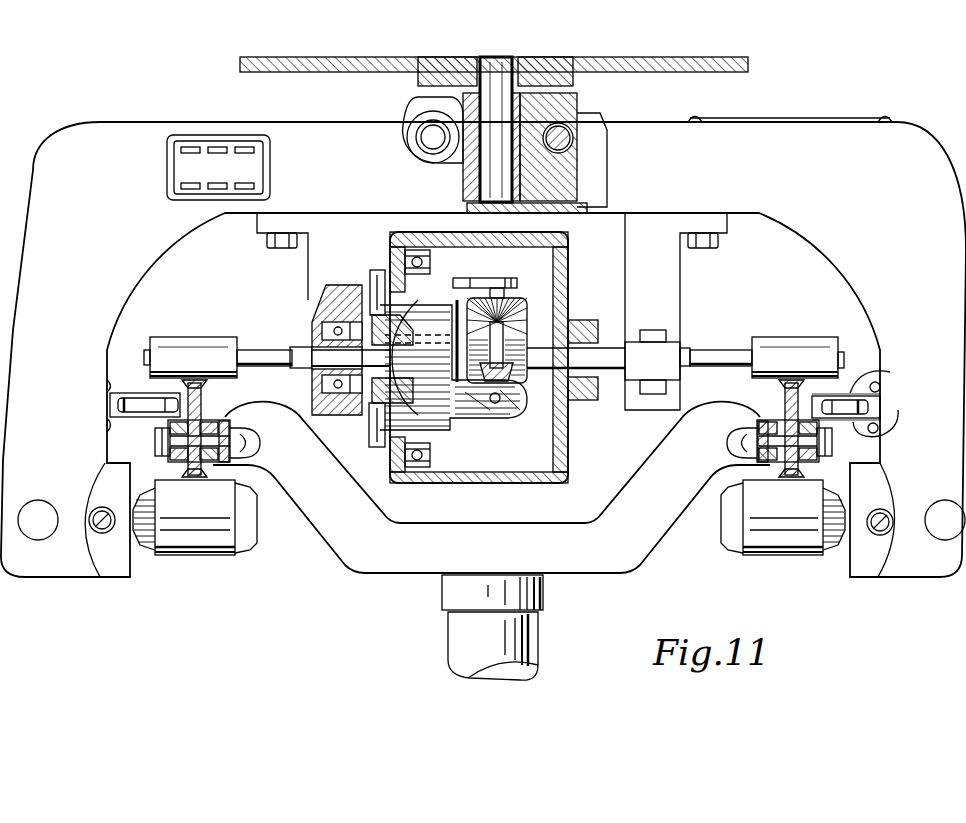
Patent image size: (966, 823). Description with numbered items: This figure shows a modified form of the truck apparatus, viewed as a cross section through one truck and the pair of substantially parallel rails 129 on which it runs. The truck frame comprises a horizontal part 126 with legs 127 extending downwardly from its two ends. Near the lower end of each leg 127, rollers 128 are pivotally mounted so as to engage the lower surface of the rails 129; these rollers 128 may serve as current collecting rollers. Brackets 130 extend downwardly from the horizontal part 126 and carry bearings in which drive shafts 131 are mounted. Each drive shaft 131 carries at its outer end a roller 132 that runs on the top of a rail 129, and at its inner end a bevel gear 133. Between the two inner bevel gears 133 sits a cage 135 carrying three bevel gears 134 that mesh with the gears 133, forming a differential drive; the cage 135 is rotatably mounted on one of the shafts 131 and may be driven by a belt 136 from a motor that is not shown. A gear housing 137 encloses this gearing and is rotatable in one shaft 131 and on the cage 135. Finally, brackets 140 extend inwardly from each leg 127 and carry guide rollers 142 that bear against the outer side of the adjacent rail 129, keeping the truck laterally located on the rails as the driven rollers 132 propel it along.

The horizontal part 126 is at (358, 176).
The legs 127 is at (69, 331).
The rollers 128 is at (786, 557).
The rails 129 is at (202, 402).
The brackets 130 is at (308, 268).
The drive shafts 131 is at (270, 352).
The roller 132 is at (200, 340).
The bevel gear 133 is at (455, 285).
The bevel gears 134 is at (510, 295).
The cage 135 is at (430, 438).
The belt 136 is at (380, 268).
The gear housing 137 is at (566, 252).
The brackets 140 is at (898, 410).
The guide rollers 142 is at (840, 414).